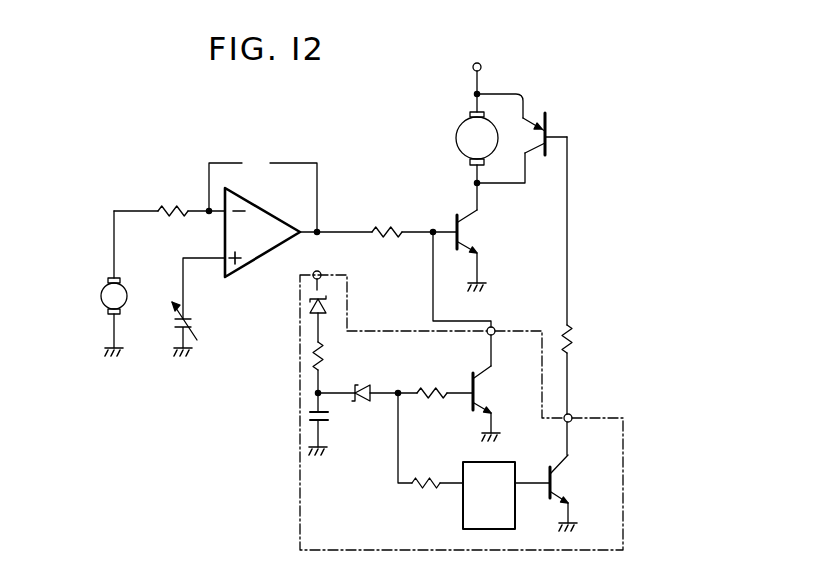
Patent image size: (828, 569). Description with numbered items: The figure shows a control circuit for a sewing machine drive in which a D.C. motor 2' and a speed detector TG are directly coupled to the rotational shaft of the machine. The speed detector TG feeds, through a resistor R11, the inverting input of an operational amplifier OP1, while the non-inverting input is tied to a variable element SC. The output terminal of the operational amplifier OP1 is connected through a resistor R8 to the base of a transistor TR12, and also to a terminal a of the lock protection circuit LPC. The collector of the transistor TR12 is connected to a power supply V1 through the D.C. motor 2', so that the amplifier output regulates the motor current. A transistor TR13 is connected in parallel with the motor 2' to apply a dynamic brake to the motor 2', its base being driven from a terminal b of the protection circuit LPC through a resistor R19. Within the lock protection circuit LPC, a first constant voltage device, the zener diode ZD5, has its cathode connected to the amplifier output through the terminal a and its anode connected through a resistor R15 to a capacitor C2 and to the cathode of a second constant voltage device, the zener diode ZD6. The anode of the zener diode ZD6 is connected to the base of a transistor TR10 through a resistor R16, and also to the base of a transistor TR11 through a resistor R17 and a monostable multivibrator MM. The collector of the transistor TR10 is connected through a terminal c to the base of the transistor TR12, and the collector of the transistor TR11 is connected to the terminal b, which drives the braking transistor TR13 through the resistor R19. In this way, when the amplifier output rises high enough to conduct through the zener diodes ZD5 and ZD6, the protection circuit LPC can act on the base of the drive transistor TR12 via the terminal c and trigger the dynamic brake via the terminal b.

The resistor R11 is at (171, 208).
The speed detector TG is at (102, 296).
The variable capacitor / speed control SC is at (176, 322).
The operational amplifier OP1 is at (254, 271).
The resistor R8 is at (388, 230).
The power supply V1 is at (472, 53).
The D.C. motor 2' is at (459, 138).
The transistor TR13 is at (547, 134).
The transistor TR12 is at (470, 233).
The terminal a is at (320, 274).
The first constant voltage device ZD5 is at (327, 300).
The resistor R15 is at (314, 358).
The second constant voltage device ZD6 is at (364, 388).
The resistor R16 is at (427, 389).
The transistor TR10 is at (480, 393).
The terminal c is at (494, 328).
The resistor R19 is at (576, 339).
The terminal b is at (572, 416).
The capacitor C2 is at (310, 414).
The resistor R17 is at (423, 481).
The monostable multivibrator MM is at (489, 495).
The transistor TR11 is at (558, 486).
The lock protection circuit LPC is at (623, 462).